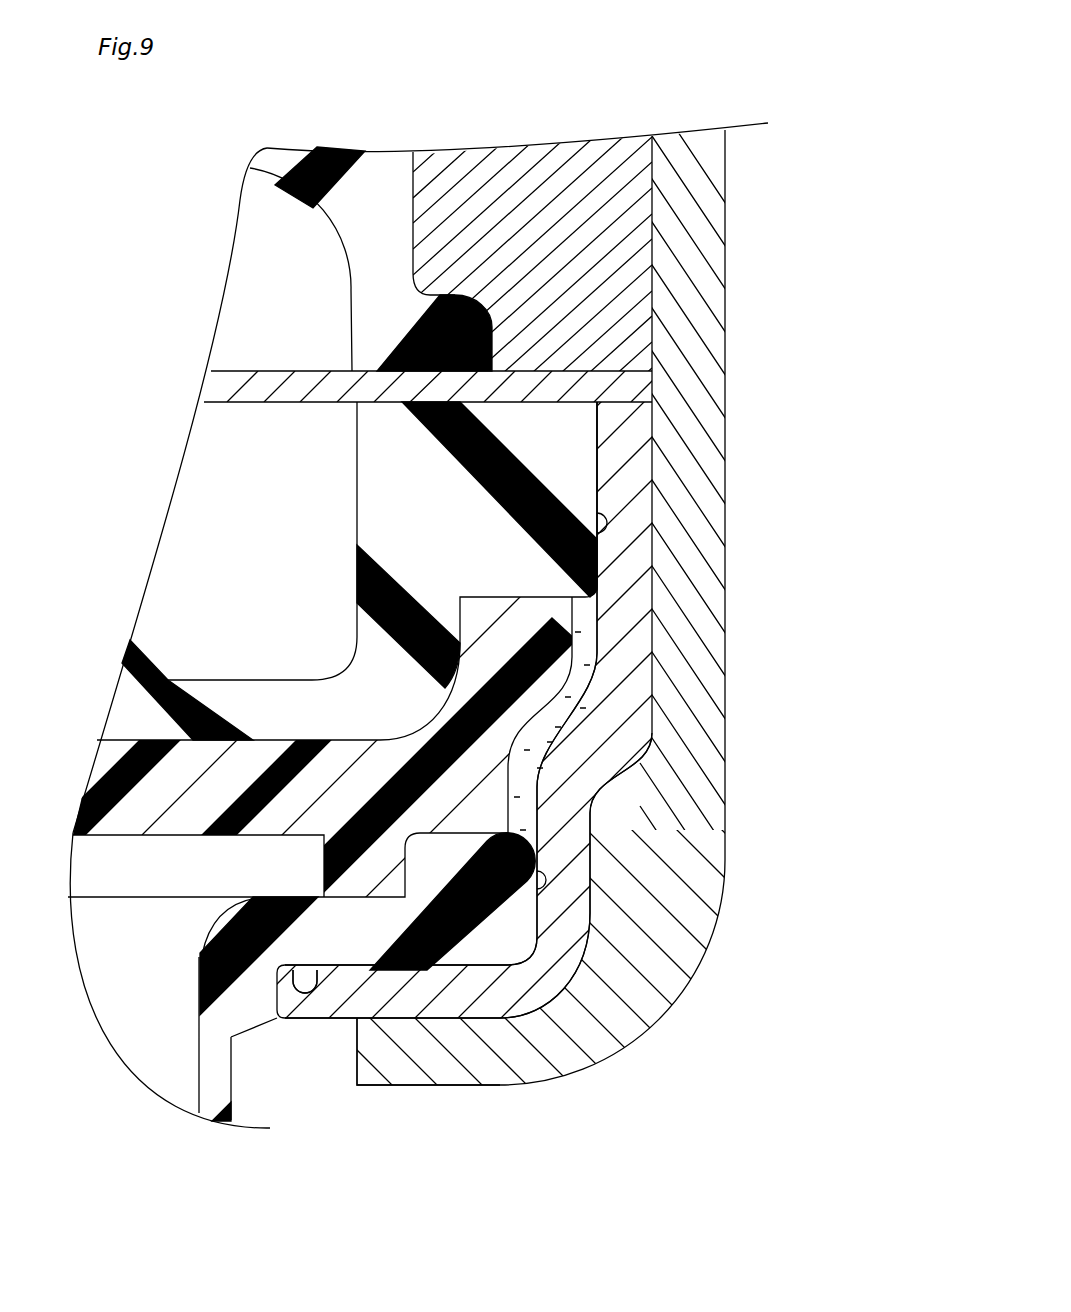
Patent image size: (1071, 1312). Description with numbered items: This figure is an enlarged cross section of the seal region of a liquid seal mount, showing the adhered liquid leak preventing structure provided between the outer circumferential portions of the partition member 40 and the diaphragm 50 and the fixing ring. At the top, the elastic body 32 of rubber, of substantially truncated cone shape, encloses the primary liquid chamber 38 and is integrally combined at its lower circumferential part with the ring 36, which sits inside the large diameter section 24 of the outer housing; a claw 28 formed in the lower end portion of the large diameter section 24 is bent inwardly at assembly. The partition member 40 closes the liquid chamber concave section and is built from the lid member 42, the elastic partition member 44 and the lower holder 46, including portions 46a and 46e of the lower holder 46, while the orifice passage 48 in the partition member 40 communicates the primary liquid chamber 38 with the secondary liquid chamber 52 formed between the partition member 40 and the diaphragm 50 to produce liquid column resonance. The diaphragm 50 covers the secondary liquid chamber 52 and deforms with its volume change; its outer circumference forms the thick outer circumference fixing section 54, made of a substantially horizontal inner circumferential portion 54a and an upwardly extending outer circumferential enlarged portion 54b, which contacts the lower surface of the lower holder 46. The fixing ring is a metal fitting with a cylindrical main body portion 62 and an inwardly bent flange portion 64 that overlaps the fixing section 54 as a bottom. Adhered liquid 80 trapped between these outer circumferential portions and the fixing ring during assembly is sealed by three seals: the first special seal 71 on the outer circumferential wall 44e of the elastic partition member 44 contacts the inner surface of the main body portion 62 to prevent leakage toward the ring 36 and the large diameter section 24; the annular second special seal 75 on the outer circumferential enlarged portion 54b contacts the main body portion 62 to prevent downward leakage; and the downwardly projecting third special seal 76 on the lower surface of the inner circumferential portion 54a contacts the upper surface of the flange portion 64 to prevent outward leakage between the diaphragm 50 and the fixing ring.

The large diameter section 24 is at (720, 247).
The claw 28 is at (438, 1083).
The elastic body 32 is at (381, 157).
The ring 36 is at (548, 162).
The primary liquid chamber 38 is at (268, 228).
The partition member 40 is at (250, 367).
The lid member 42 is at (215, 390).
The elastic partition member 44 is at (540, 418).
The outer circumferential wall 44e is at (567, 458).
The lower holder 46 is at (83, 792).
The lip portion 46a is at (174, 825).
The end of second elastic member 46e is at (552, 618).
The orifice passage 48 is at (298, 509).
The diaphragm 50 is at (197, 1033).
The secondary liquid chamber 52 is at (120, 977).
The thick outer circumference fixing section 54 is at (492, 950).
The inner circumferential portion 54a is at (360, 943).
The outer circumferential enlarged portion 54b is at (525, 923).
The main body portion 62 is at (633, 478).
The flange portion 64 is at (312, 987).
The first special seal for adhered liquid 71 is at (615, 523).
The second special seal for adhered liquid 75 is at (556, 880).
The third special seal for adhered liquid 76 is at (305, 995).
The adhered liquid 80 is at (582, 687).